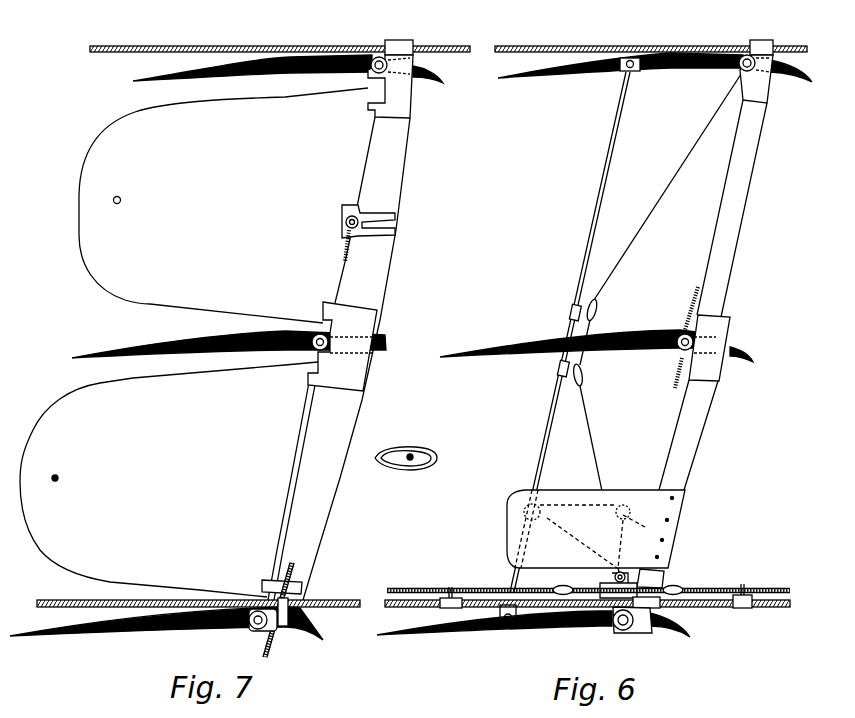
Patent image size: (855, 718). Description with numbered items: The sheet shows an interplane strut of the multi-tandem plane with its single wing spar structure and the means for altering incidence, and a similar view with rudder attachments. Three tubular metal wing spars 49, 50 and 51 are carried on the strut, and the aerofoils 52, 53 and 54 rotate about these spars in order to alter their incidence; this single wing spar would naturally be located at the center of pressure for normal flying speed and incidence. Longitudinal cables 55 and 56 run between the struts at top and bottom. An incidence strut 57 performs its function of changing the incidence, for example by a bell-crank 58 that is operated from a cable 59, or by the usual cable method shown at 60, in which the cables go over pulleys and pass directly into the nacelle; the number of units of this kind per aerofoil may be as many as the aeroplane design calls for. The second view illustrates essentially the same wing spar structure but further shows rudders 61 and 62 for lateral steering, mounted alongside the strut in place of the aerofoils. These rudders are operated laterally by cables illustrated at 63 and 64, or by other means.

In FIG. 7, the wing spar 49 is at (376, 77).
In FIG. 6, the wing spar 49 is at (742, 70).
In FIG. 7, the wing spar 50 is at (313, 347).
In FIG. 6, the wing spar 50 is at (679, 353).
In FIG. 7, the wing spar 51 is at (254, 626).
In FIG. 6, the wing spar 51 is at (618, 631).
In FIG. 6, the aerofoil 52 is at (602, 74).
In FIG. 6, the aerofoil 53 is at (533, 350).
In FIG. 6, the aerofoil 54 is at (464, 629).
In FIG. 7, the longitudinal cable 55 is at (253, 47).
In FIG. 6, the longitudinal cable 55 is at (598, 47).
In FIG. 7, the longitudinal cable 56 is at (67, 604).
In FIG. 6, the longitudinal cable 56 is at (409, 603).
In FIG. 6, the incidence strut 57 is at (592, 218).
In FIG. 6, the bell-crank 58 is at (596, 529).
In FIG. 6, the cable 59 is at (703, 592).
In FIG. 6, the cable method 60 is at (626, 258).
In FIG. 7, the rudder 61 is at (223, 205).
In FIG. 7, the rudder 62 is at (169, 479).
In FIG. 7, the cable 63 is at (121, 200).
In FIG. 7, the cable 64 is at (82, 478).